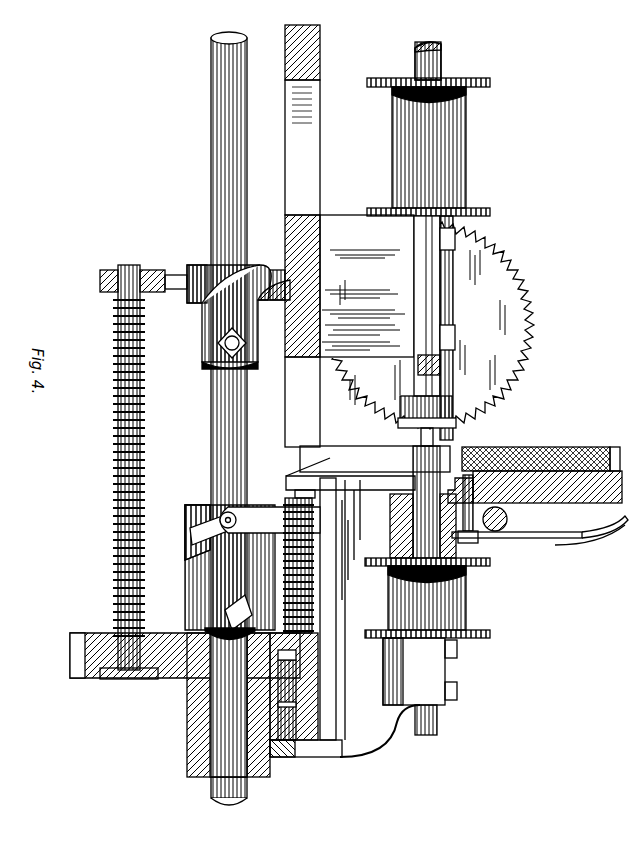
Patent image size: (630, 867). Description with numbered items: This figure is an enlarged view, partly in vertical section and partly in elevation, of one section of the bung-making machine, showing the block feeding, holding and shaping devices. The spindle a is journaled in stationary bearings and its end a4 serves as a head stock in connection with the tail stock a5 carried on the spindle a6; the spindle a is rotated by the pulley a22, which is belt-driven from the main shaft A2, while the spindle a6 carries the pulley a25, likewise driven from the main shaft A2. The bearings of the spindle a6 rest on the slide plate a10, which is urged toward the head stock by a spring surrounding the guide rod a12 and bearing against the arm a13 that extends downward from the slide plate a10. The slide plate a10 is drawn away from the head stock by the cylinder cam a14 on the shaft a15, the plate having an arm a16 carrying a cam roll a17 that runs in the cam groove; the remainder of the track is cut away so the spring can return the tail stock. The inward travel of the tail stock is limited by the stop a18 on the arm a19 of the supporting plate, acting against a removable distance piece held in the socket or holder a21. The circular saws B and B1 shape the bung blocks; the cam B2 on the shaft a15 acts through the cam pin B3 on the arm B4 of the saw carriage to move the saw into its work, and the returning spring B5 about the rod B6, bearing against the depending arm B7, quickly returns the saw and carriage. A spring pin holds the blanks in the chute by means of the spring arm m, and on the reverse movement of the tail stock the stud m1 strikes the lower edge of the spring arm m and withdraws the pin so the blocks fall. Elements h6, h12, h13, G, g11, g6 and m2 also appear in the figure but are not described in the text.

The spindle a is at (438, 44).
The shaft a15 is at (213, 128).
The main shaft A2 is at (322, 170).
The pulley a22 is at (394, 140).
The circular saw B is at (205, 265).
The circular saw B1 is at (280, 270).
The cam B2 is at (482, 318).
The cam pin B3 is at (245, 300).
The arm B4 is at (215, 268).
The returning spring B5 is at (117, 490).
The rod B6 is at (130, 690).
The arm B7 is at (100, 278).
The end of spindle a4 is at (415, 410).
The spring arm m is at (418, 475).
The bar h6 is at (368, 468).
The arm a13 is at (290, 492).
The block h12 is at (515, 447).
The block end h13 is at (580, 447).
The guide G is at (555, 495).
The tail stock a5 is at (443, 460).
The stop or stud m1 is at (470, 520).
The roller g11 is at (507, 515).
The bar g6 is at (505, 532).
The arm m2 is at (584, 544).
The pulley a25 is at (458, 595).
The spindle a6 is at (380, 731).
The cylinder cam a14 is at (186, 603).
The cam roll a17 is at (215, 505).
The arm a16 is at (270, 524).
The guide rod a12 is at (288, 505).
The slide plate a10 is at (351, 610).
The socket or holder a21 is at (265, 665).
The stop a18 is at (295, 728).
The arm a19 is at (285, 758).